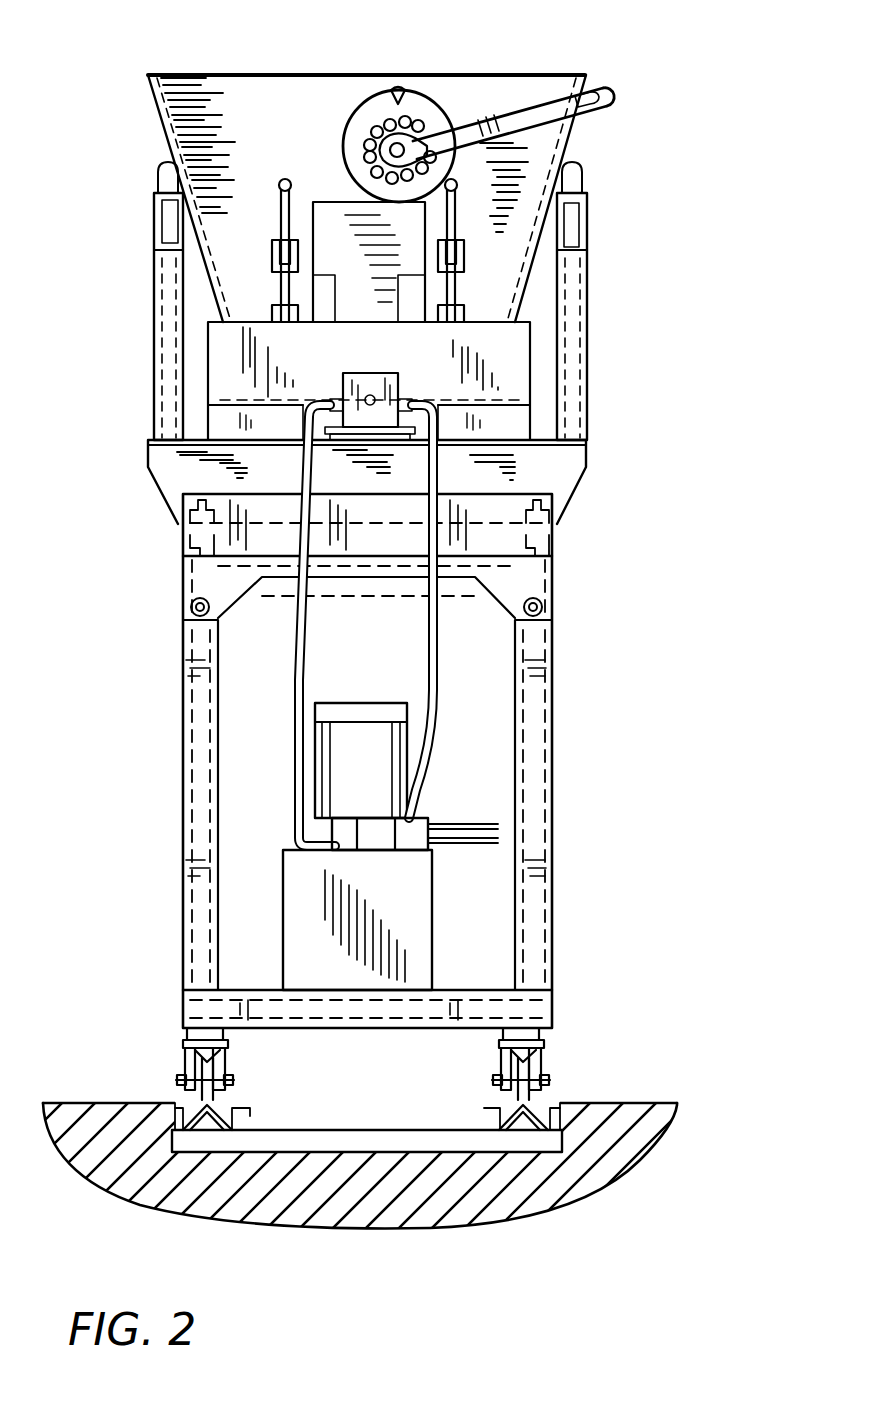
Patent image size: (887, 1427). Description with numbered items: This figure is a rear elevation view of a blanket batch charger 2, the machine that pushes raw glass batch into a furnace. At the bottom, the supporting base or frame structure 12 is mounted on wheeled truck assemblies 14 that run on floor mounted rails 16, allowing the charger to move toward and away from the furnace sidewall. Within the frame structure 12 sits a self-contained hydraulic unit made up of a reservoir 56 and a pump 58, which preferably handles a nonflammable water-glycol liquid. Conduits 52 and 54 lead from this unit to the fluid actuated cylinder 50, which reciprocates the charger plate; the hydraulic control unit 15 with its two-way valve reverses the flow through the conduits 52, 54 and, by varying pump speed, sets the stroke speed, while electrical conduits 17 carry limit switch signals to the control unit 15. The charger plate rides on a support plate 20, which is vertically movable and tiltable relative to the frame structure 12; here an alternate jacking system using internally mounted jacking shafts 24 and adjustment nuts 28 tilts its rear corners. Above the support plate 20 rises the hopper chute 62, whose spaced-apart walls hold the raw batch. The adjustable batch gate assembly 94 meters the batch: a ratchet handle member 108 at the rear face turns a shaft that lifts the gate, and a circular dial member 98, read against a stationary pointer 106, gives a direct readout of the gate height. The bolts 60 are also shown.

The batch charger 2 is at (575, 680).
The frame structure 12 is at (552, 903).
The wheeled truck assemblies 14 is at (548, 1055).
The hydraulic control unit 15 is at (378, 817).
The floor mounted rails 16 is at (193, 1113).
The electrical conduits 17 is at (455, 817).
The support plate 20 is at (540, 450).
The jacking shafts 24 is at (182, 540).
The adjustment nuts 28 is at (182, 511).
The fluid actuated cylinder 50 is at (375, 372).
The conduit 52 is at (305, 643).
The conduit 54 is at (440, 703).
The reservoir 56 is at (422, 957).
The pump 58 is at (363, 703).
The bolts 60 is at (420, 298).
The hopper chute 62 is at (242, 73).
The adjustable batch gate assembly 94 is at (447, 108).
The circular dial member 98 is at (346, 130).
The stationary pointer 106 is at (399, 88).
The ratchet handle member 108 is at (549, 98).